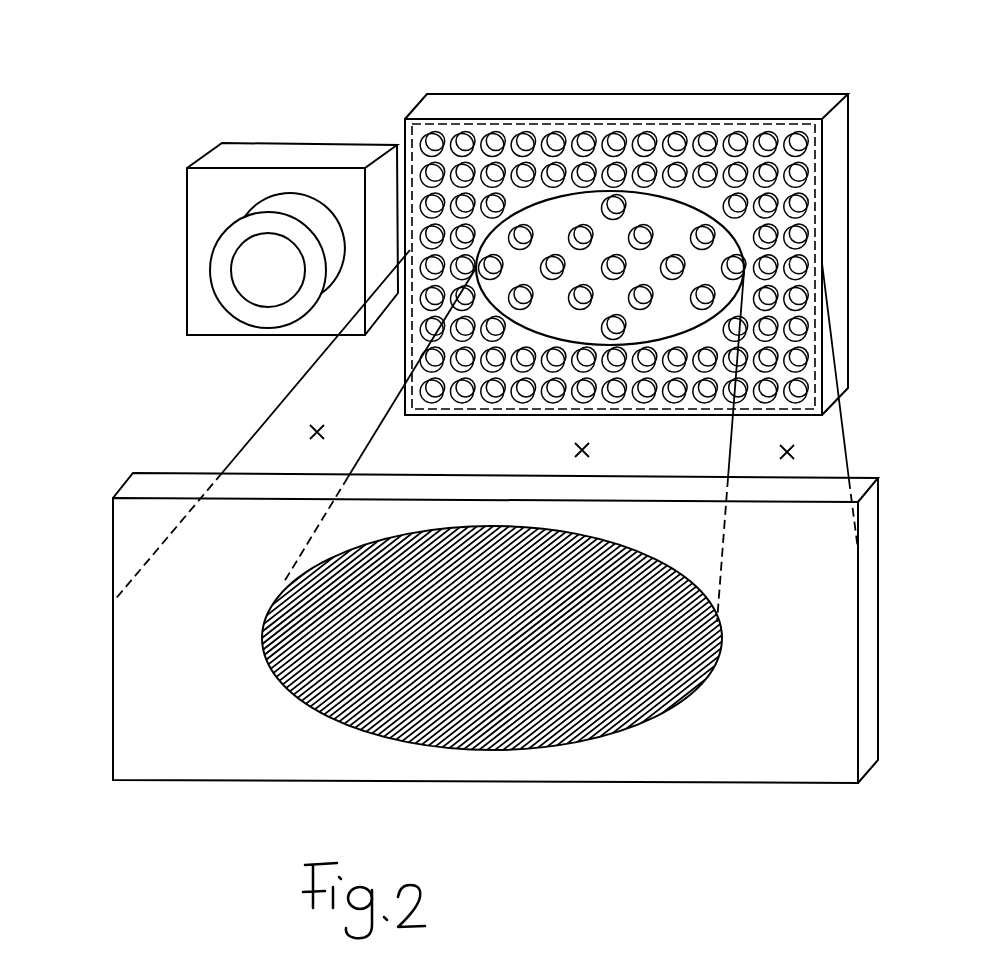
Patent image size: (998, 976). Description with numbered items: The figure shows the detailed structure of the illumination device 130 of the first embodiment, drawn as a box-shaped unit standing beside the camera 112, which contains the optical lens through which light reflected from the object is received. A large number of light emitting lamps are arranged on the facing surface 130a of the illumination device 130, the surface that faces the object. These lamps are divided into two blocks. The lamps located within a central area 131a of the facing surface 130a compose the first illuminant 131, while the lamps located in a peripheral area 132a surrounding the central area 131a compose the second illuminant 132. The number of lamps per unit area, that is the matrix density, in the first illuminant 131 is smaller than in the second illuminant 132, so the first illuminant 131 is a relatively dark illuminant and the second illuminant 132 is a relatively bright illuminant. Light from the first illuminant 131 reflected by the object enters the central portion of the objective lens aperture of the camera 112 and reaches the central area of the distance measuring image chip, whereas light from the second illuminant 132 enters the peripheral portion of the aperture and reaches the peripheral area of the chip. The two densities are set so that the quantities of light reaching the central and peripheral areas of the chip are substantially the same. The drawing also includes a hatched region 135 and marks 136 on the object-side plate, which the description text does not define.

The camera 112 is at (302, 142).
The illumination device 130 is at (653, 93).
The facing surface 130a is at (817, 123).
The first illuminant 131 is at (713, 288).
The central area 131a is at (733, 230).
The second illuminant 132 is at (802, 163).
The peripheral area 132a is at (820, 227).
The illuminated area 135 is at (588, 450).
The measurement point 136 is at (308, 435).